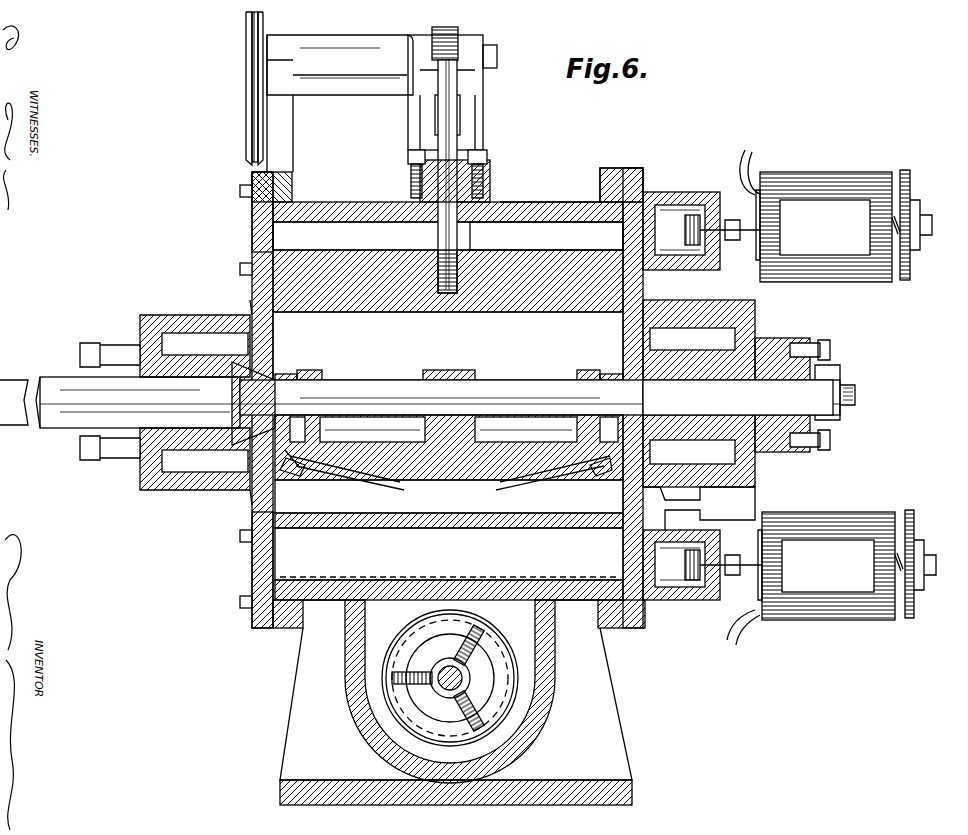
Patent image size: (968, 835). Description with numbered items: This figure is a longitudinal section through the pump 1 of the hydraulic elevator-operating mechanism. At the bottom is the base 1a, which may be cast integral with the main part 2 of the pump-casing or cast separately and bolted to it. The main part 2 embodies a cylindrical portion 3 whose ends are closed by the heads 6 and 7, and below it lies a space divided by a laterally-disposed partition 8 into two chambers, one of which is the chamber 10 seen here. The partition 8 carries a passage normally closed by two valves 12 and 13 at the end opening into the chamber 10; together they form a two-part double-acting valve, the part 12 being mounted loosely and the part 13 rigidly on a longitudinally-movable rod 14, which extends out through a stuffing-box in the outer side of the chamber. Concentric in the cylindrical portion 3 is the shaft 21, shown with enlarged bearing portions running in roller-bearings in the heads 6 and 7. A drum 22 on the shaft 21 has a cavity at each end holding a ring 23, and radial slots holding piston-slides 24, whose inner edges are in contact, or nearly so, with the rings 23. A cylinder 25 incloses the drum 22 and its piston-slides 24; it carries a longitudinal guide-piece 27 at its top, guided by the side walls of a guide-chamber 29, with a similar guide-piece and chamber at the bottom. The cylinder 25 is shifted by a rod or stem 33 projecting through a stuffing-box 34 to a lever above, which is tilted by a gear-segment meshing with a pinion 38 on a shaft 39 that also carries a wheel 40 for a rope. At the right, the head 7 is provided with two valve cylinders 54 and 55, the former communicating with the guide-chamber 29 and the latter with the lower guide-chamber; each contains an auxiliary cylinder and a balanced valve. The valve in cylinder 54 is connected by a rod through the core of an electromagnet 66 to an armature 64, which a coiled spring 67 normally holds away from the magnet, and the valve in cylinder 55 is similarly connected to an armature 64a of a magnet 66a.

The pump 1 is at (240, 262).
The base 1a is at (632, 796).
The main part of the pump-casing 2 is at (252, 571).
The cylindrical portion 3 is at (545, 203).
The head 6 is at (252, 232).
The head 7 is at (632, 172).
The partition 8 is at (459, 570).
The chamber 10 is at (486, 625).
The valve 12 is at (450, 678).
The valve 13 is at (426, 628).
The rod 14 is at (445, 690).
The shaft 21 is at (380, 386).
The drum 22 is at (438, 478).
The ring 23 is at (560, 418).
The piston-slides 24 is at (448, 347).
The cylinder 25 is at (568, 478).
The guide-piece 27 is at (390, 252).
The guide-chamber 29 is at (546, 236).
The rod or stem 33 is at (458, 236).
The stuffing-box 34 is at (488, 176).
The pinion 38 is at (458, 32).
The shaft 39 is at (497, 58).
The wheel 40 is at (237, 88).
The valve cylinder 54 is at (701, 217).
The valve cylinder 55 is at (702, 578).
The armature 64 is at (918, 225).
The armature 64a is at (929, 564).
The electromagnet 66 is at (816, 216).
The magnet 66a is at (811, 578).
The coiled spring 67 is at (896, 238).